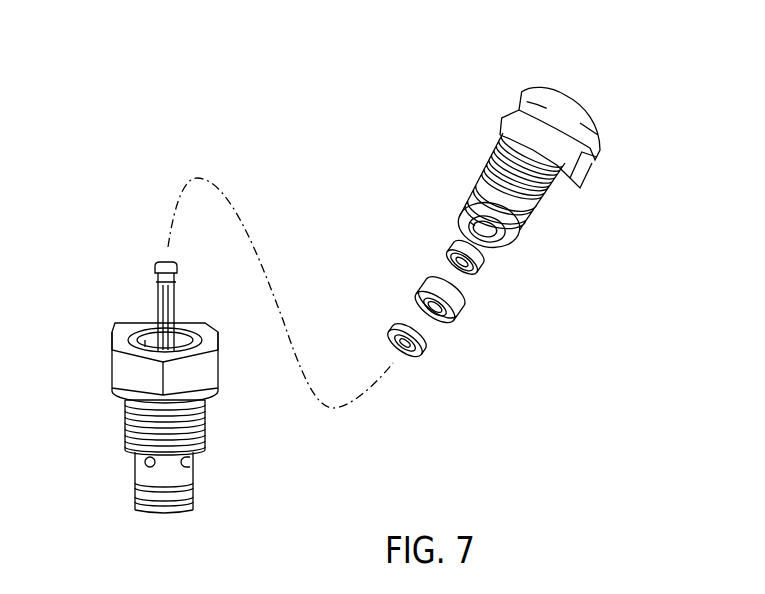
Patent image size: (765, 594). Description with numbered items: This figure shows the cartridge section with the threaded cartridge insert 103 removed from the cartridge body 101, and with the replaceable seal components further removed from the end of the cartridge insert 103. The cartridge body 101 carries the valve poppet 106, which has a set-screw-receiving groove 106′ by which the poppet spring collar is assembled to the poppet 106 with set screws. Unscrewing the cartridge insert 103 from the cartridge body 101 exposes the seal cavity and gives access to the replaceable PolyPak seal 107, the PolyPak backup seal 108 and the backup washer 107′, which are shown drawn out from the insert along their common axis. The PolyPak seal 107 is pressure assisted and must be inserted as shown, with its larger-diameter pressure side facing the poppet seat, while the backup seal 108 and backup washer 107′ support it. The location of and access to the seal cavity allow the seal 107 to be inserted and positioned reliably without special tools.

The cartridge body 101 is at (125, 367).
The cartridge insert 103 is at (590, 170).
The valve poppet 106 is at (158, 299).
The set-screw-receiving groove 106′ is at (521, 94).
The PolyPak seal 107 is at (460, 298).
The backup washer 107′ is at (427, 347).
The PolyPak backup seal 108 is at (483, 261).